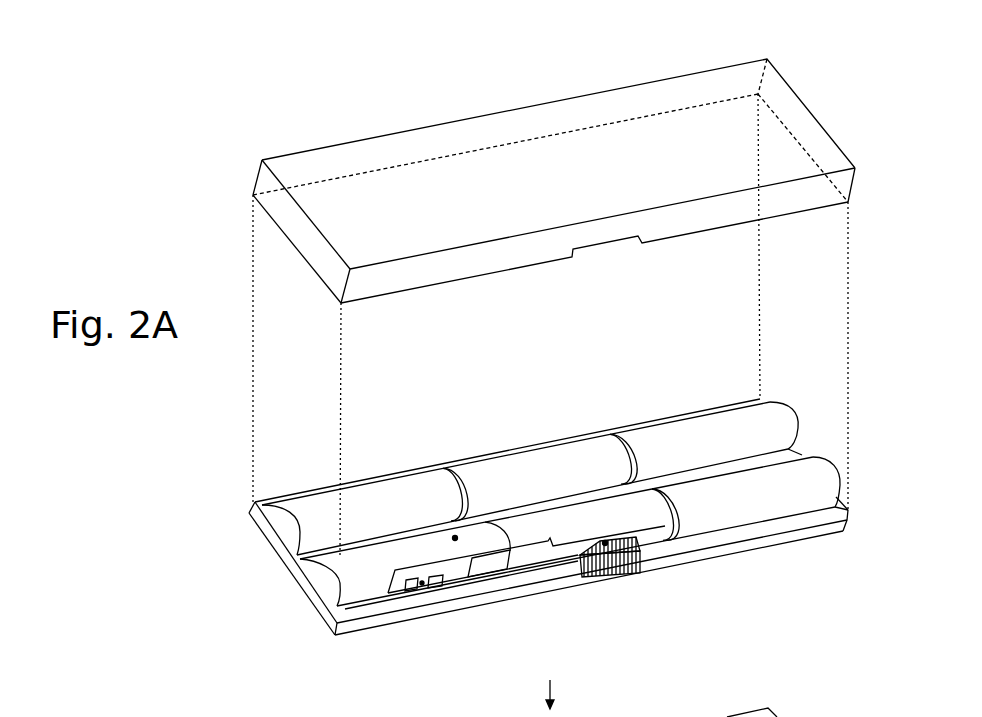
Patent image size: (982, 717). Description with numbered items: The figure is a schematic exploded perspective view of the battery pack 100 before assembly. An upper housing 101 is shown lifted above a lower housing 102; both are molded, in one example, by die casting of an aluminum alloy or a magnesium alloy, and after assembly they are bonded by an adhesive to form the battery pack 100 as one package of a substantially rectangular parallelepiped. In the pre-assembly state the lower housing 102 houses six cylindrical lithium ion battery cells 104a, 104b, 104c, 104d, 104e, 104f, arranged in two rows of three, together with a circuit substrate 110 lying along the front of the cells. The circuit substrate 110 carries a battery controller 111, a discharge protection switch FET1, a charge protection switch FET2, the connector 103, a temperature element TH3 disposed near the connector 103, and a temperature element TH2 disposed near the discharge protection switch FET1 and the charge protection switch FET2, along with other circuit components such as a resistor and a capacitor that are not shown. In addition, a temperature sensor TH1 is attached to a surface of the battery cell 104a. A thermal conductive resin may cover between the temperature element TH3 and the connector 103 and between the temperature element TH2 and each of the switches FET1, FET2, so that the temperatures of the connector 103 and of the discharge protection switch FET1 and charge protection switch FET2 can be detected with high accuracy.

The battery pack 100 is at (389, 74).
The upper housing 101 is at (567, 98).
The lower housing 102 is at (315, 594).
The connector 103 is at (585, 578).
The battery cell 104a is at (392, 576).
The battery cell 104b is at (603, 532).
The battery cell 104c is at (768, 511).
The battery cell 104d is at (406, 521).
The battery cell 104e is at (543, 493).
The battery cell 104f is at (723, 458).
The circuit substrate 110 is at (543, 553).
The battery controller 111 is at (483, 568).
The temperature sensor TH1 is at (455, 536).
The temperature element TH2 is at (425, 590).
The temperature element TH3 is at (605, 542).
The discharge protection switch FET1 is at (412, 596).
The charge protection switch FET2 is at (432, 587).